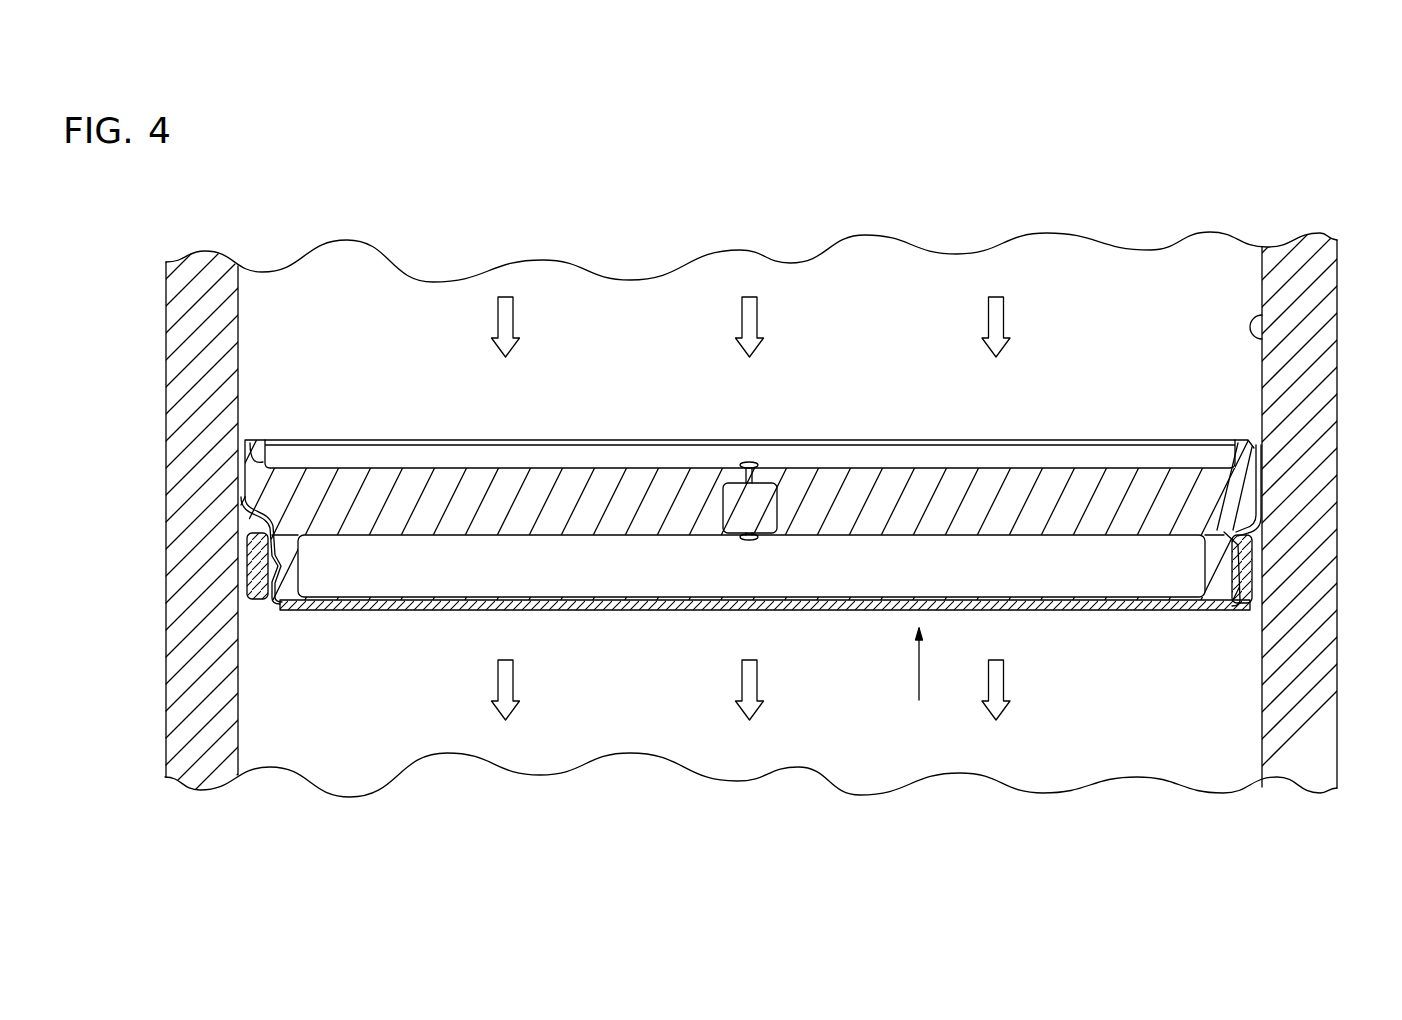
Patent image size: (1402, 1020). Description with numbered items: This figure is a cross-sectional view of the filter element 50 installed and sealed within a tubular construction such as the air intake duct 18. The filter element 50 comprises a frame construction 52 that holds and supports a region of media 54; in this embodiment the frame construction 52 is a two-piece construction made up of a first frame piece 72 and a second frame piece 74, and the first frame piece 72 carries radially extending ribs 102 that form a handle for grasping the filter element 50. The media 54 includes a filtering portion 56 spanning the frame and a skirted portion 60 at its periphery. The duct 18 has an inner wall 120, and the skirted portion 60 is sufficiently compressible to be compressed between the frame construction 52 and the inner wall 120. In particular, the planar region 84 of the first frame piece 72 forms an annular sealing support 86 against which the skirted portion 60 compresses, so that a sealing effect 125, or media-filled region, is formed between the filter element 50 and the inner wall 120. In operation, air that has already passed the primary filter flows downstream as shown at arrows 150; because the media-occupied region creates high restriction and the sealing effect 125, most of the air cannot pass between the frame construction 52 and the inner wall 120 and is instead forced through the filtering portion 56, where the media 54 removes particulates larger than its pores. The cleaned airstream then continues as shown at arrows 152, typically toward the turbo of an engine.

The duct 18 is at (166, 381).
The filter element 50 is at (466, 380).
The frame construction 52 is at (414, 438).
The media 54 is at (918, 675).
The filtering portion 56 is at (643, 612).
The skirted portion 60 is at (240, 497).
The first frame piece 72 is at (1245, 440).
The second frame piece 74 is at (1246, 607).
The planar region 84 is at (258, 445).
The annular sealing support 86 is at (242, 505).
The ribs 102 is at (995, 468).
The inner wall 120 is at (1262, 338).
The sealing effect 125 is at (1268, 488).
The arrows 150 is at (513, 314).
The arrows 152 is at (513, 680).